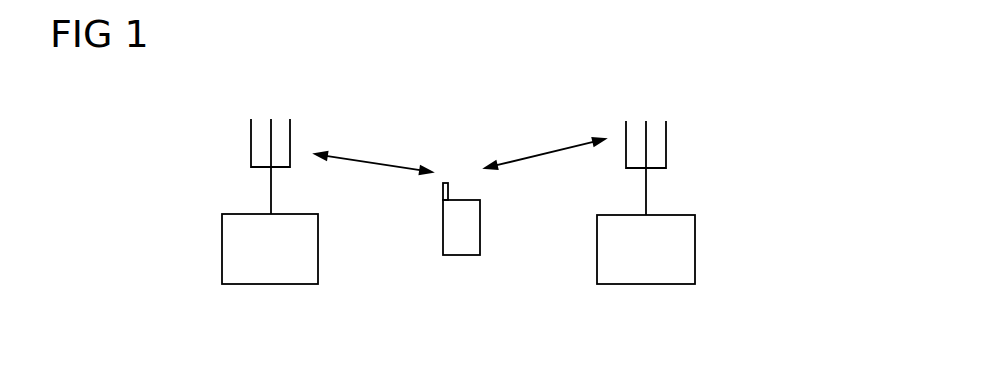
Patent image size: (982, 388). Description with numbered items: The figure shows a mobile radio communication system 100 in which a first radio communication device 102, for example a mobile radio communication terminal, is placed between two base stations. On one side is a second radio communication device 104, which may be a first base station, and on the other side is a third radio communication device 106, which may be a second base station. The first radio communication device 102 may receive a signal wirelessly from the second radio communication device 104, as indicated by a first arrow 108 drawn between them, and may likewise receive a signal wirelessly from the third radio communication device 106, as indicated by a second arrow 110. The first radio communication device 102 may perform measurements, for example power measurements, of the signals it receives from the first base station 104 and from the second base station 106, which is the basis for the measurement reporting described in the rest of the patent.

The mobile radio communication system 100 is at (759, 130).
The first radio communication device 102 is at (451, 243).
The second radio communication device 104 is at (623, 263).
The third radio communication device 106 is at (248, 263).
The first arrow 108 is at (522, 157).
The second arrow 110 is at (357, 158).